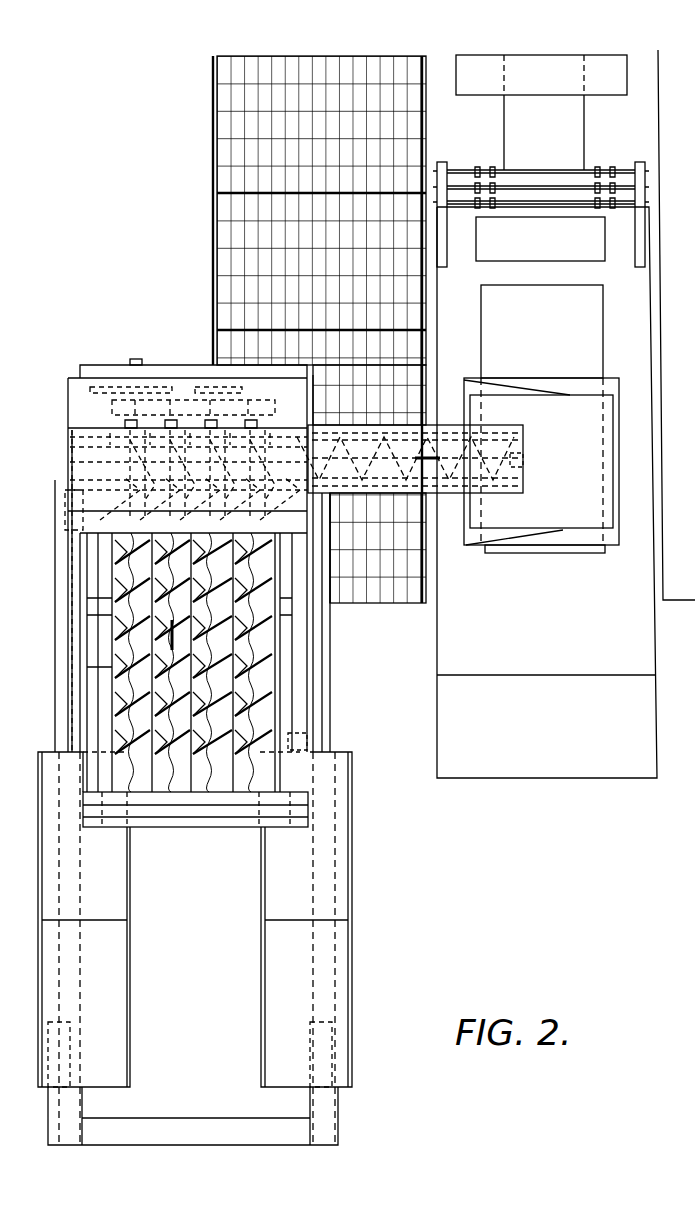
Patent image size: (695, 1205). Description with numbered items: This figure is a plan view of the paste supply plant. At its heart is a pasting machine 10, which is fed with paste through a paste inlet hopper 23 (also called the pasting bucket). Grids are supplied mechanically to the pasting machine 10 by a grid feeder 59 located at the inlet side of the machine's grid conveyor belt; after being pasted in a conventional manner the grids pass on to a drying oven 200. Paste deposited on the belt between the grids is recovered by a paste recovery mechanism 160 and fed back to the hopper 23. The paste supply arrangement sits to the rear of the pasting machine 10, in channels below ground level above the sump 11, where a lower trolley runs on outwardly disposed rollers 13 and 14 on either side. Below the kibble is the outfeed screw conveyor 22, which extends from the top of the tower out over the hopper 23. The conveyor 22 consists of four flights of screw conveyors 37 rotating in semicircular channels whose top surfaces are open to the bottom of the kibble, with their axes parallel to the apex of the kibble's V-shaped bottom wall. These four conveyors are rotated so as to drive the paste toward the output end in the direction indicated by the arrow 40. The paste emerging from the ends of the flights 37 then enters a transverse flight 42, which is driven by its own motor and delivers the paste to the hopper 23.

The pasting machine 10 is at (608, 352).
The sump 11 is at (212, 152).
The roller 13 is at (68, 511).
The roller 14 is at (318, 737).
The screw conveyor 22 is at (530, 442).
The paste inlet hopper 23 is at (588, 556).
The screw conveyor flights 37 is at (150, 700).
The arrow 40 is at (145, 660).
The transverse flight 42 is at (75, 436).
The grid feeder 59 is at (583, 782).
The paste recovery mechanism 160 is at (620, 162).
The drying oven 200 is at (594, 56).